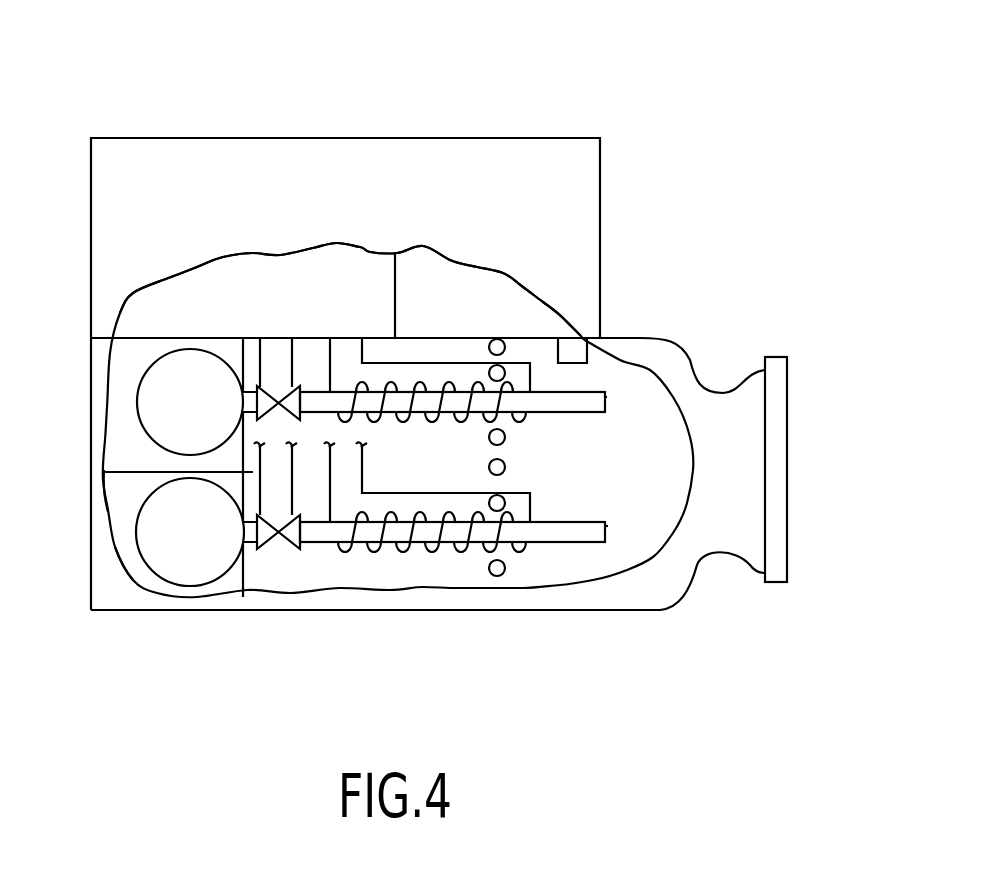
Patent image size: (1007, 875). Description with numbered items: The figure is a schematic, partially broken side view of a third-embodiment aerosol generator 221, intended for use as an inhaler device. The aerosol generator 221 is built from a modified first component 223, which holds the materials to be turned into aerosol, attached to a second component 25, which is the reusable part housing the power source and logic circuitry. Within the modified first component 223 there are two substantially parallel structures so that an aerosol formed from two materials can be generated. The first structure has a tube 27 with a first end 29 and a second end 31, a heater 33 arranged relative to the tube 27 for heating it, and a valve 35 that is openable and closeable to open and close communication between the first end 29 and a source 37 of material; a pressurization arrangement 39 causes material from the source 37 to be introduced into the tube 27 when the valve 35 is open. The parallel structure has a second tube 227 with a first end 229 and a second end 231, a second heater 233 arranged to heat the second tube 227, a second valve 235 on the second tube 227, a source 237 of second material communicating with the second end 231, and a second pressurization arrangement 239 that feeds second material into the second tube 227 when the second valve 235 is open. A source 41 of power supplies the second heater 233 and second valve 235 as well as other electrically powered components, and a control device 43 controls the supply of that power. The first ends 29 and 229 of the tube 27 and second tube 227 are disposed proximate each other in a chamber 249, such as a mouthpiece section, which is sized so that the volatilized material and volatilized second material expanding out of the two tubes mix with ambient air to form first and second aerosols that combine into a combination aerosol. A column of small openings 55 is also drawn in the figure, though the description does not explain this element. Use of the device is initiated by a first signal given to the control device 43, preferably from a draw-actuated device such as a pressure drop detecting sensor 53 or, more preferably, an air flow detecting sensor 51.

The aerosol generator 221 is at (463, 109).
The second component 25 is at (578, 135).
The modified first component 223 is at (665, 331).
The chamber 249 is at (641, 604).
The pressure drop detecting sensor 53 is at (788, 477).
The source of material 37 is at (120, 389).
The pressurization arrangement 39 is at (124, 442).
The second pressurization arrangement 239 is at (118, 511).
The source of second material 237 is at (137, 573).
The source of power 41 is at (188, 317).
The control device 43 is at (480, 317).
The second end of tube 31 is at (243, 403).
The second end of second tube 231 is at (243, 531).
The valve 35 is at (266, 392).
The second valve 235 is at (292, 545).
The tube 27 is at (559, 416).
The second tube 227 is at (555, 519).
The heater 33 is at (433, 424).
The second heater 233 is at (438, 547).
The first end of tube 29 is at (607, 397).
The first end of second tube 229 is at (608, 526).
The vent holes 55 is at (499, 576).
The air flow detecting sensor 51 is at (578, 345).